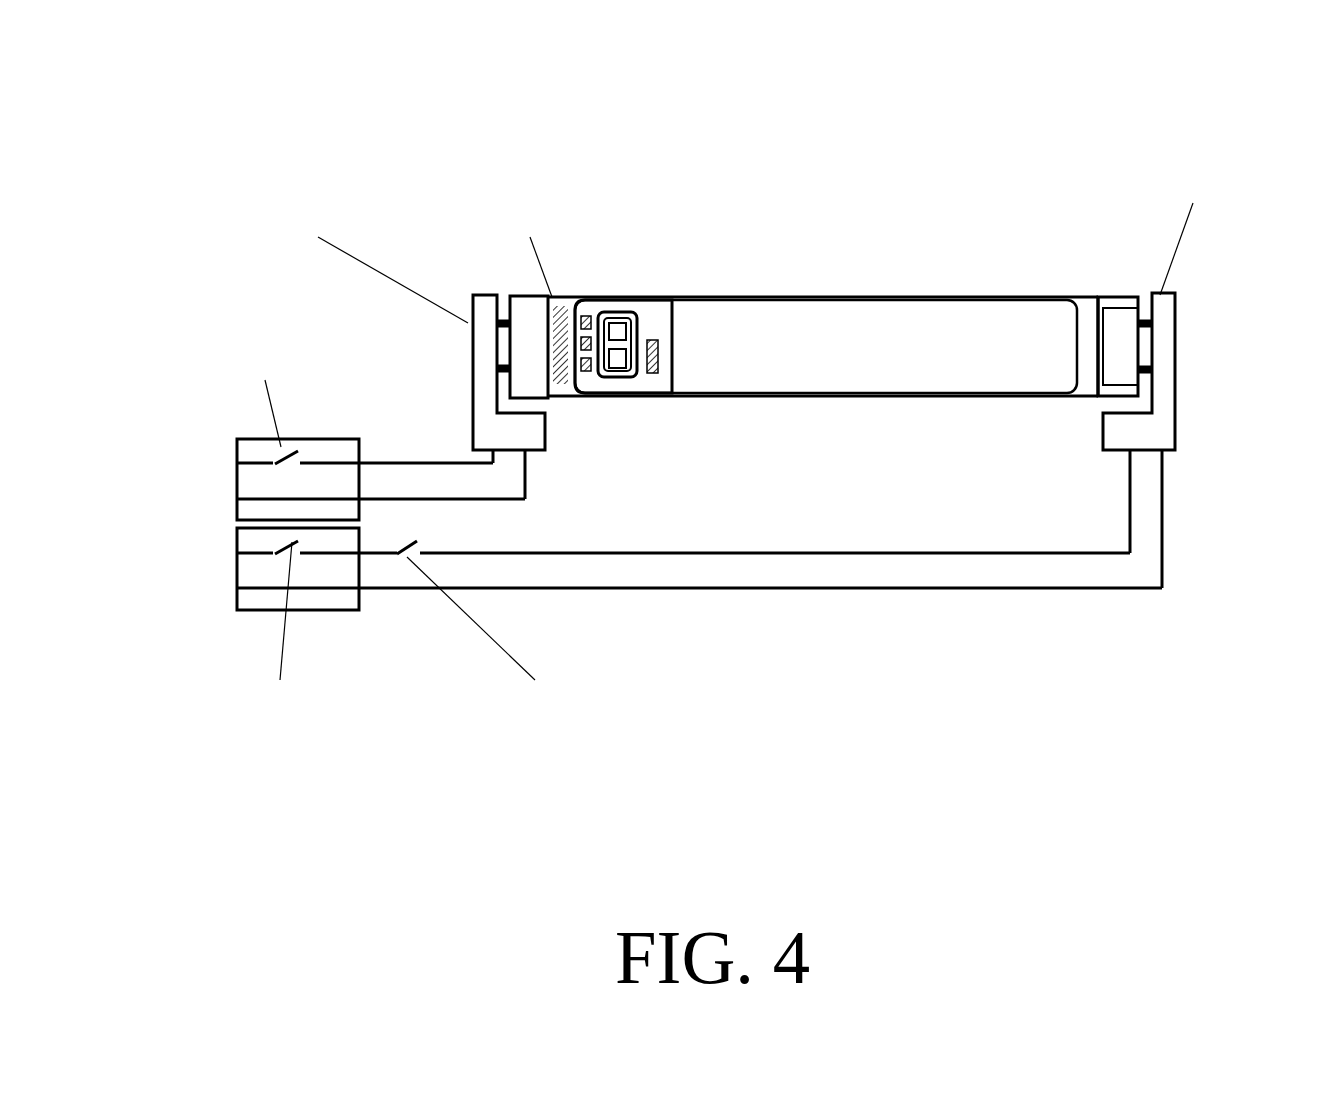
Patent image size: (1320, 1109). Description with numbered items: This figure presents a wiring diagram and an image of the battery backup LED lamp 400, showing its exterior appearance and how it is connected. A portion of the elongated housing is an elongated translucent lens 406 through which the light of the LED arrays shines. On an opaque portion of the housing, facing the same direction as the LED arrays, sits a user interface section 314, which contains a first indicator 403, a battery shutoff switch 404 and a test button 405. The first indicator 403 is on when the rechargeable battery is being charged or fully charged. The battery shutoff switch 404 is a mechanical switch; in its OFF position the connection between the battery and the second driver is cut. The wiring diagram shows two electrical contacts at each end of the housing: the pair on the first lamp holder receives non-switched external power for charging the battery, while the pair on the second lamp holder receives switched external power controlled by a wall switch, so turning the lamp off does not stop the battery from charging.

The lighting system 400 is at (703, 415).
The user interface section 314 is at (653, 312).
The first indicator 403 is at (577, 351).
The battery shutoff switch 404 is at (637, 373).
The test button 405 is at (657, 340).
The elongated translucent lens 406 is at (853, 302).